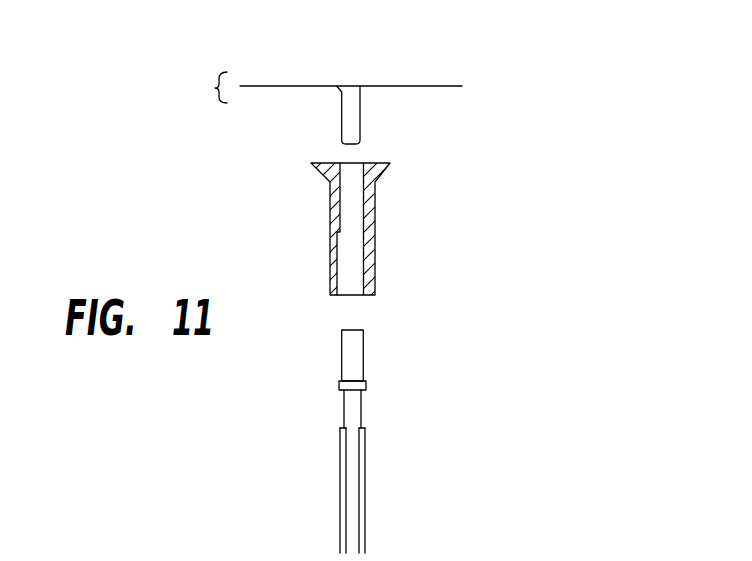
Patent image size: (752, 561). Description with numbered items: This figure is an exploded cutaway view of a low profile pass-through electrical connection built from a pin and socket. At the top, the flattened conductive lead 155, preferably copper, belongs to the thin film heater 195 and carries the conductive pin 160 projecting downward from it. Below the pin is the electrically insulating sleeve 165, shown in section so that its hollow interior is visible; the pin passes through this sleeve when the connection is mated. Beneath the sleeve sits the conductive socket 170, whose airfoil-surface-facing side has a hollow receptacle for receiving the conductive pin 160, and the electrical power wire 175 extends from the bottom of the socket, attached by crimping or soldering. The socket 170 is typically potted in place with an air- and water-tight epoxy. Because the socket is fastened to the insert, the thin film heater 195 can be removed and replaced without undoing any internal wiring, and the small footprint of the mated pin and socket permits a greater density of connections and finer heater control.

The thin film heater 195 is at (210, 85).
The flattened conductive lead 155 is at (413, 86).
The conductive pin 160 is at (355, 115).
The electrically insulating sleeve 165 is at (367, 211).
The conductive socket 170 is at (355, 357).
The electrical power wire 175 is at (362, 503).